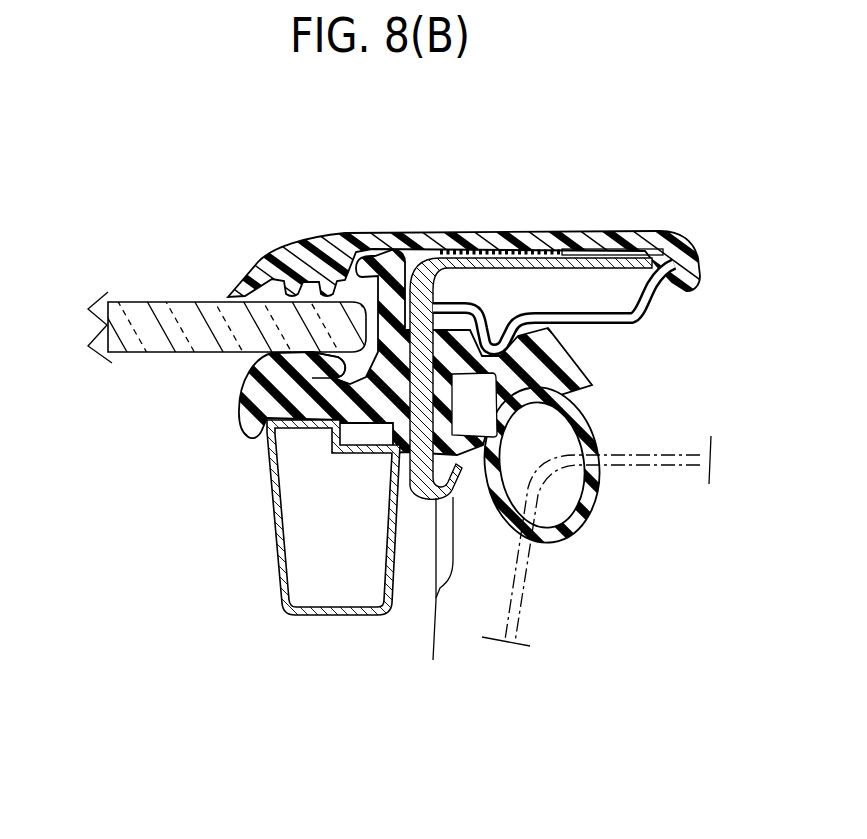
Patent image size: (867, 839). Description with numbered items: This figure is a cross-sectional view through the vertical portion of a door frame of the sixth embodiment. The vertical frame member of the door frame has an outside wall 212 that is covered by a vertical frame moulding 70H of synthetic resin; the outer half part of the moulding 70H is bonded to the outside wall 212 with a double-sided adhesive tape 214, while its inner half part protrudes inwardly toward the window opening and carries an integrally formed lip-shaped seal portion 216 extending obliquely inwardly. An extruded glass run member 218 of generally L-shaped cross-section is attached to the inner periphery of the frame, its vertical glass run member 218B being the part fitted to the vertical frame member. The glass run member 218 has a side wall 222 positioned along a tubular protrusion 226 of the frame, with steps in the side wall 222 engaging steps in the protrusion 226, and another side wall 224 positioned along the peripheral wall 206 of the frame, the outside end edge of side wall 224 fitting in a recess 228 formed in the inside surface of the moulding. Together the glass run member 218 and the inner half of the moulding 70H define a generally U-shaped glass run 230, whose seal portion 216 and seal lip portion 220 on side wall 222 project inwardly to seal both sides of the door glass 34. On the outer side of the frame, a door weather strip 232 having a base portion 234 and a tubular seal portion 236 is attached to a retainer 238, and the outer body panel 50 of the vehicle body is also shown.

The door glass 34 is at (160, 300).
The lip-shaped seal portion 216 is at (246, 292).
The side wall 224 is at (337, 240).
The recess 228 is at (396, 248).
The vertical frame moulding 70H is at (457, 228).
The double-sided adhesive tape 214 is at (522, 232).
The outside wall 212 is at (606, 232).
The seal lip portion 220 is at (280, 354).
The glass run member 218 is at (210, 422).
The glass run 230 is at (236, 450).
The vertical glass run member 218B is at (270, 432).
The side wall 222 is at (396, 452).
The base portion 234 is at (577, 387).
The door weather strip 232 is at (602, 418).
The tubular seal portion 236 is at (597, 510).
The outer body panel 50 is at (520, 598).
The peripheral wall 206 is at (268, 590).
The tubular protrusion 226 is at (338, 617).
The retainer 238 is at (433, 600).